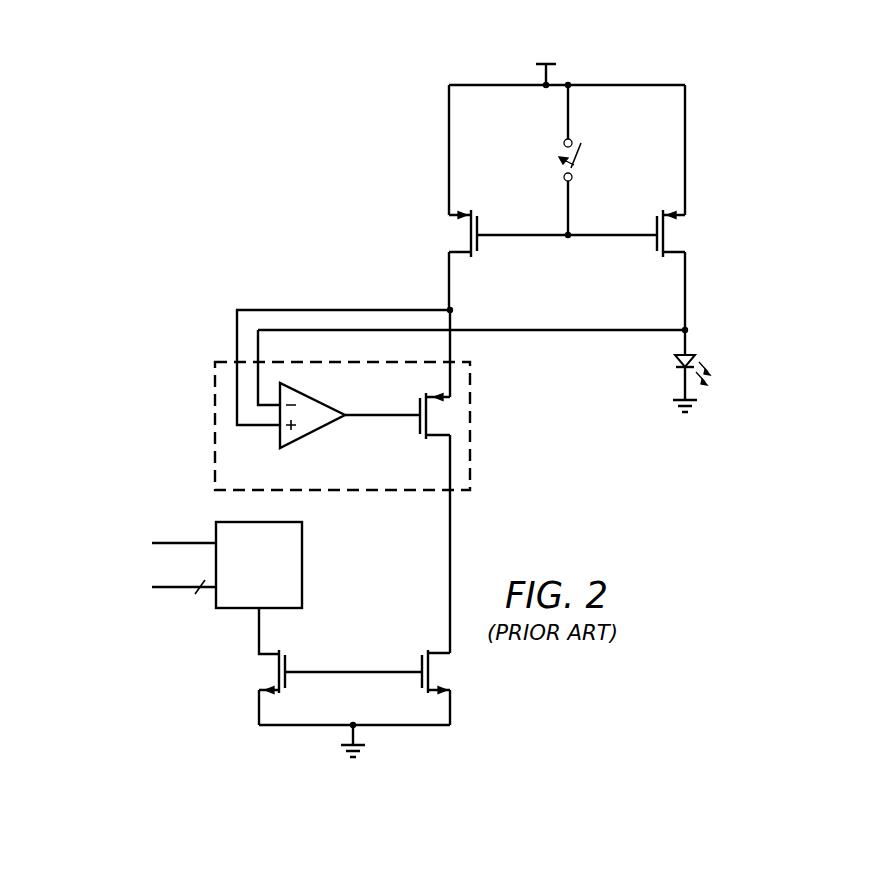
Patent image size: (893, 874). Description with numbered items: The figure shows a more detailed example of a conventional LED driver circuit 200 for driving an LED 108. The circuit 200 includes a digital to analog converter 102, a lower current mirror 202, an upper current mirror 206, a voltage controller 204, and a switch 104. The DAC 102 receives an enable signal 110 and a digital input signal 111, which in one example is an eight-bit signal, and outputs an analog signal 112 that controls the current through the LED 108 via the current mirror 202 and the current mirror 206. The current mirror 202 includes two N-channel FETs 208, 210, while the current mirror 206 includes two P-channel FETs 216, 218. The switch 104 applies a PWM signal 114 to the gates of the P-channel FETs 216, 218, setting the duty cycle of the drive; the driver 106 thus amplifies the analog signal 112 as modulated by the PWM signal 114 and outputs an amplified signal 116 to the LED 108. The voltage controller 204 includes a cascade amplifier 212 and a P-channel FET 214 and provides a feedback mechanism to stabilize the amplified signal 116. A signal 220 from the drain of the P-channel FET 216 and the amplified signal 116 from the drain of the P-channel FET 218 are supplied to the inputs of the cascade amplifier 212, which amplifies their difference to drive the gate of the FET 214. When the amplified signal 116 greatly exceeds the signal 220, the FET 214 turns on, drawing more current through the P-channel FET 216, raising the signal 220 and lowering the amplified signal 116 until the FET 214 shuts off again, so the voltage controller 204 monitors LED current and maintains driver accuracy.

The LED driver circuit 200 is at (258, 156).
The current mirror 206 is at (620, 85).
The switch 104 is at (578, 153).
The PWM signal 114 is at (565, 232).
The P-channel FET 216 is at (483, 256).
The P-channel FET 218 is at (652, 256).
The amplified signal 116 is at (680, 326).
The LED 108 is at (677, 362).
The driver 106 is at (352, 283).
The signal 220 is at (235, 338).
The voltage controller 204 is at (214, 405).
The cascade amplifier 212 is at (310, 437).
The P-channel FET 214 is at (418, 400).
The enable signal 110 is at (185, 540).
The digital input signal 111 is at (172, 592).
The digital to analog converter 102 is at (303, 566).
The analog signal 112 is at (256, 630).
The N-channel FET 208 is at (290, 690).
The N-channel FET 210 is at (420, 662).
The current mirror 202 is at (400, 728).